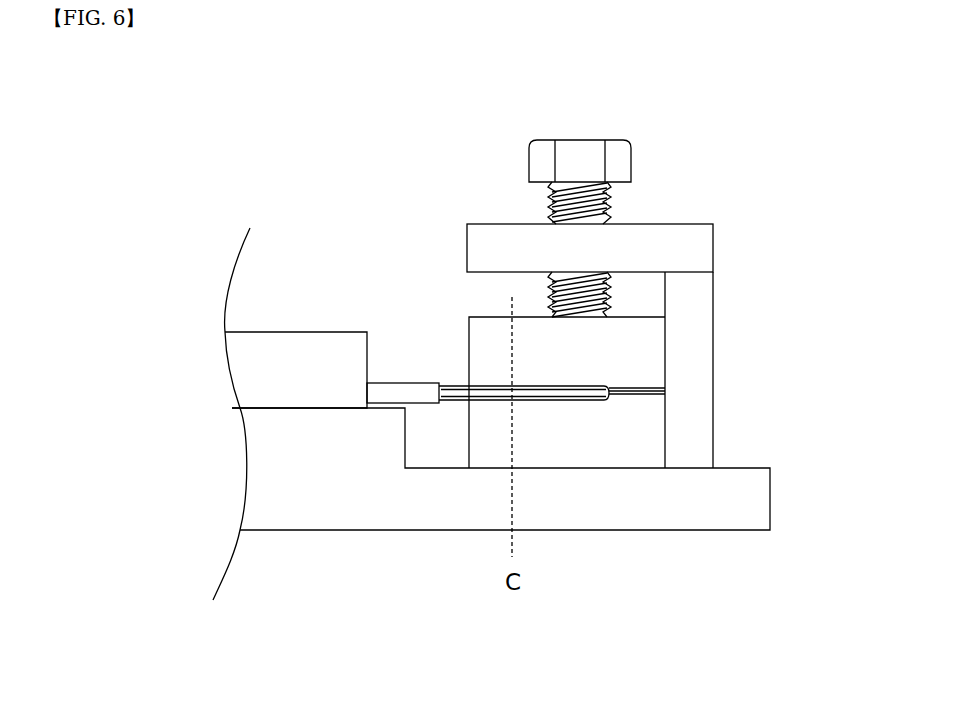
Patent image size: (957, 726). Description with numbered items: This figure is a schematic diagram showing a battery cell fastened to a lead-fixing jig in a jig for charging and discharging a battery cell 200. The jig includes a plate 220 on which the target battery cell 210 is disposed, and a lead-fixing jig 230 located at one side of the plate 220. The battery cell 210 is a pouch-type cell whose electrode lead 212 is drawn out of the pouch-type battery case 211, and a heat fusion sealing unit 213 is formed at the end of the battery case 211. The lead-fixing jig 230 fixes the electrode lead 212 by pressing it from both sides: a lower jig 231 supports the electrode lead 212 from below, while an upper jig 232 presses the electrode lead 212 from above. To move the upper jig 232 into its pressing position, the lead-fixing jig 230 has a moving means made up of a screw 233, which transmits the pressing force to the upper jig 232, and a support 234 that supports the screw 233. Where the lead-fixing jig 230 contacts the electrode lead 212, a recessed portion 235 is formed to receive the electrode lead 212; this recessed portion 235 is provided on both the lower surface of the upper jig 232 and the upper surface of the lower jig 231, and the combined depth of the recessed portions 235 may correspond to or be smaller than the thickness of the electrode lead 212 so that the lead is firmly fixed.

The jig for charging and discharging a battery cell 200 is at (178, 115).
The battery cell 210 is at (417, 300).
The battery case 211 is at (240, 330).
The electrode lead 212 is at (460, 385).
The heat fusion sealing unit 213 is at (397, 382).
The plate 220 is at (318, 530).
The lead-fixing jig 230 is at (673, 304).
The lower jig 231 is at (648, 430).
The upper jig 232 is at (648, 350).
The screw 233 is at (664, 228).
The support 234 is at (713, 243).
The recessed portion 235 is at (545, 400).